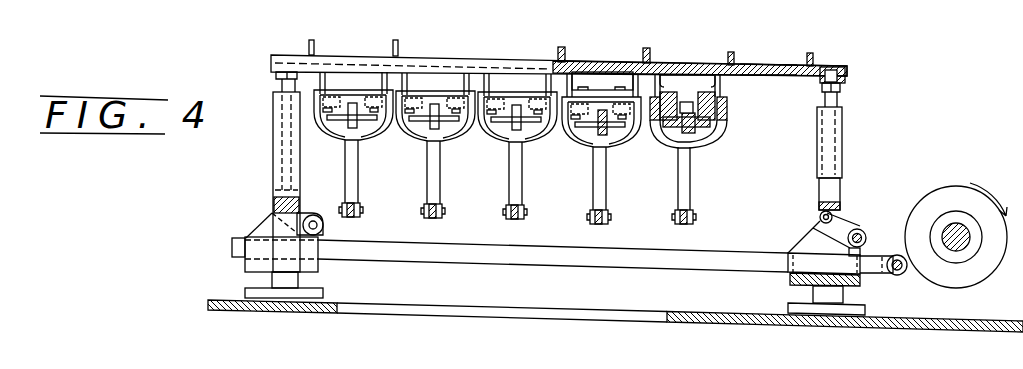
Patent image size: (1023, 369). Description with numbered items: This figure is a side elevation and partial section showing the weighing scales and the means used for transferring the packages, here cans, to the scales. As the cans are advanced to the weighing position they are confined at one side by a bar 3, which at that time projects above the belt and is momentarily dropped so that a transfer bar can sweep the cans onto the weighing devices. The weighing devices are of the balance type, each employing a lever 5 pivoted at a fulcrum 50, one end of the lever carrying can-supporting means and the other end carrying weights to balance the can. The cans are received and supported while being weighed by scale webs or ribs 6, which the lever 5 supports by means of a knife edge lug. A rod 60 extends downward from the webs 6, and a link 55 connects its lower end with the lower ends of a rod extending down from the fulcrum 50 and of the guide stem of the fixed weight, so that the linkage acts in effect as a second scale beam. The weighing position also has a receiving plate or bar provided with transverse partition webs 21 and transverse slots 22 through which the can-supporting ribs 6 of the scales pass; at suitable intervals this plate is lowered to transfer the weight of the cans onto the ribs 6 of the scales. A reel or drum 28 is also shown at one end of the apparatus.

The bar 3 is at (511, 62).
The transverse partition webs 21 is at (478, 53).
The transverse slots 22 is at (797, 64).
The scale webs 6 is at (629, 85).
The lever 5 is at (502, 129).
The fulcrum 50 is at (582, 129).
The link 55 is at (435, 218).
The rod 60 is at (428, 175).
The reel 28 is at (962, 251).